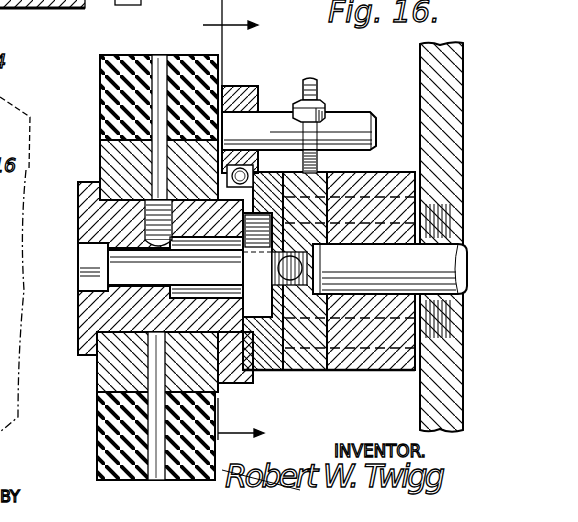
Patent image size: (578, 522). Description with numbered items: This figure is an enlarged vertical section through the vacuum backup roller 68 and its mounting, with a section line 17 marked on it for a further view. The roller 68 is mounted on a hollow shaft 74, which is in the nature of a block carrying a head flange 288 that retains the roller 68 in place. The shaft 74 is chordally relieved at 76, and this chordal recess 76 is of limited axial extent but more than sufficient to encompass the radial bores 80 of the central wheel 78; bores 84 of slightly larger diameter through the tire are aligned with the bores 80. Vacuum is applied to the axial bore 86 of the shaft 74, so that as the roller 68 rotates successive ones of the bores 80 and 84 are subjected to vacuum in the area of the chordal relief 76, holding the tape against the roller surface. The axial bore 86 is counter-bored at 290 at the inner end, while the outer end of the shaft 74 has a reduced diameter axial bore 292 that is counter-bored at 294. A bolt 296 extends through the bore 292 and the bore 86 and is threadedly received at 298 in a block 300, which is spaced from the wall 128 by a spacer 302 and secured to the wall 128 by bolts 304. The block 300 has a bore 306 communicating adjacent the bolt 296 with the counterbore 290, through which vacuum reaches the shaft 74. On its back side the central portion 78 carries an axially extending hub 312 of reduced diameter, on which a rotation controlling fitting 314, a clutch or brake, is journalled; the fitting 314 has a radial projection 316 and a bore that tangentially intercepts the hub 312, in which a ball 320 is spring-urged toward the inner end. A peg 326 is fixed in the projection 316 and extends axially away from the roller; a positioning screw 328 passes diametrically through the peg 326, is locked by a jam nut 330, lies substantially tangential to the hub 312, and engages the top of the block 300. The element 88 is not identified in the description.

The section line 17— 17 is at (233, 229).
The vacuum backup roller 68 is at (85, 452).
The hollow shaft 74 is at (118, 307).
The chordal relief 76 is at (147, 211).
The central wheel 78 is at (100, 378).
The radial bores 80 is at (100, 146).
The radial bores 84 is at (160, 72).
The axial bore 86 is at (84, 337).
The member 88 is at (136, 5).
The wall 128 is at (424, 57).
The head flange 288 is at (100, 167).
The counterbore 290 is at (238, 255).
The reduced diameter axial bore 292 is at (121, 247).
The counterbore 294 is at (80, 298).
The bolt 296 is at (190, 286).
The threaded portion 298 is at (297, 290).
The block 300 is at (283, 186).
The spacer 302 is at (386, 175).
The bolts 304 is at (441, 240).
The bore 306 is at (325, 258).
The hub 312 is at (240, 383).
The rotation controlling fitting 314 is at (257, 380).
The projection 316 is at (240, 84).
The ball 320 is at (299, 131).
The peg 326 is at (364, 110).
The positioning screw 328 is at (332, 122).
The jam nut 330 is at (323, 102).